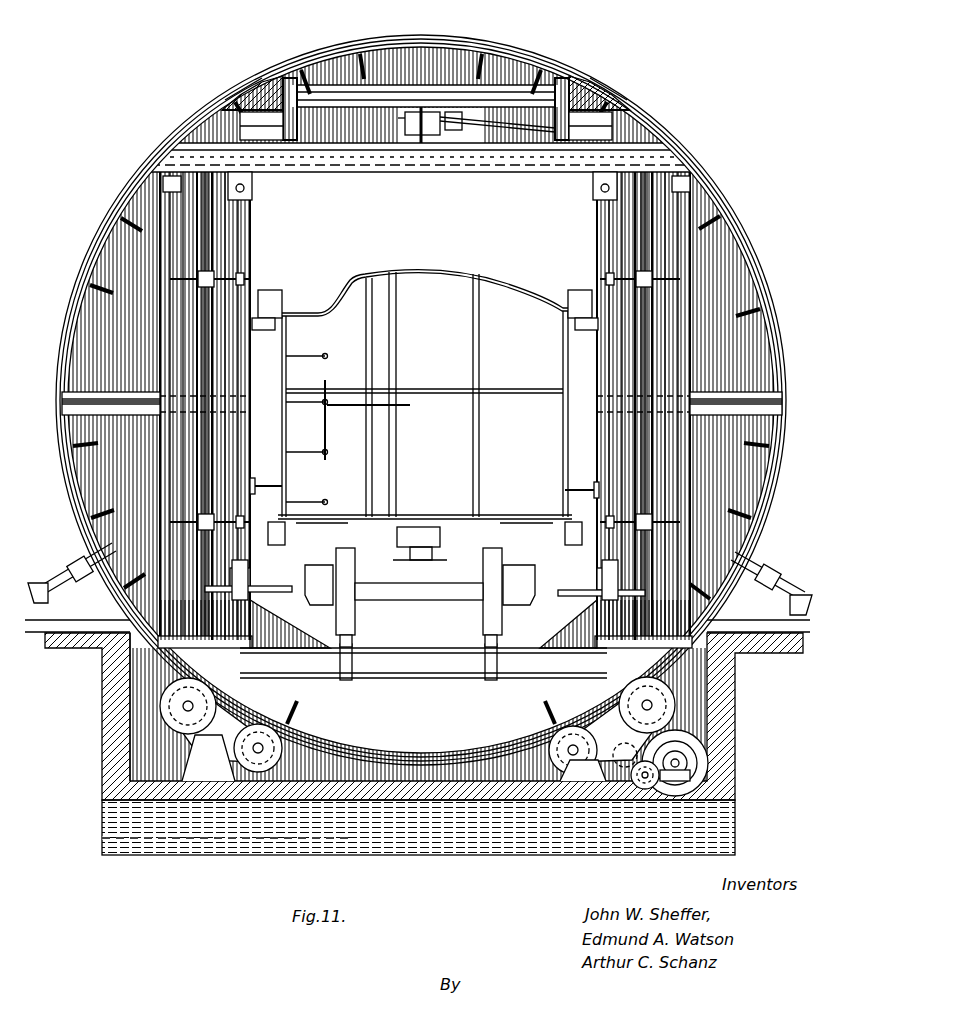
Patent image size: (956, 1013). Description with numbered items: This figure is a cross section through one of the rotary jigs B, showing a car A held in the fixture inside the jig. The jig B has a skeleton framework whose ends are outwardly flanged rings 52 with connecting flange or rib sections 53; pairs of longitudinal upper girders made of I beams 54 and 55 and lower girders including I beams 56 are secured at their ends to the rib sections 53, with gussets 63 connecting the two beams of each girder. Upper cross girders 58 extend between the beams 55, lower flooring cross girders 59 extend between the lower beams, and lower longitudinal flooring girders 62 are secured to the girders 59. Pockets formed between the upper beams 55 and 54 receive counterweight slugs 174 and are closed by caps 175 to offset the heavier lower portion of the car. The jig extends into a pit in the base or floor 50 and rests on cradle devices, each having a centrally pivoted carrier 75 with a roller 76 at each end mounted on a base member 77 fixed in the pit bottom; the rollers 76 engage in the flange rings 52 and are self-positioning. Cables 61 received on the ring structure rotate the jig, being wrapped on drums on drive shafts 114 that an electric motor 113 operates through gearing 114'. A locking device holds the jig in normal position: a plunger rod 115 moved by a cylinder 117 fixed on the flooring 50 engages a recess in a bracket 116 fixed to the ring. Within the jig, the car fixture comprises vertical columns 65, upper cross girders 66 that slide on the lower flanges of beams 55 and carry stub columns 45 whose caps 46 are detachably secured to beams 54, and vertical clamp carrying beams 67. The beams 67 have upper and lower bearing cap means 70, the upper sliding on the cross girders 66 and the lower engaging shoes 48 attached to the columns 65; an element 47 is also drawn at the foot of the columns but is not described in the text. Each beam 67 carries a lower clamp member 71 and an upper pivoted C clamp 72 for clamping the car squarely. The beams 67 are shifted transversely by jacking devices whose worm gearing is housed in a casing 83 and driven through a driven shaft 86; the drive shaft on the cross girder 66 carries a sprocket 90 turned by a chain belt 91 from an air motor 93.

The stub column 45 is at (248, 136).
The stub column cap 46 is at (250, 122).
The base plate 47 is at (255, 590).
The shoe 48 is at (232, 576).
The base or floor 50 is at (62, 648).
The outwardly flanged ring 52 is at (68, 412).
The connecting flange section 53 is at (115, 238).
The I beam 54 is at (242, 92).
The I beam 55 is at (293, 80).
The I beam 56 is at (120, 672).
The upper cross girder 58 is at (472, 88).
The lower flooring cross girder 59 is at (420, 665).
The cable 61 is at (500, 783).
The lower longitudinal flooring girder 62 is at (352, 652).
The gusset 63 is at (128, 690).
The vertical column 65 is at (172, 202).
The upper cross girder 66 is at (358, 162).
The vertical clamp carrying beam 67 is at (243, 240).
The bearing cap means 70 is at (238, 198).
The lower clamp member 71 is at (265, 486).
The upper pivoted C clamp 72 is at (262, 290).
The centrally pivoted carrier 75 is at (417, 727).
The roller 76 is at (165, 712).
The base member 77 is at (200, 765).
The casing 83 is at (198, 279).
The driven shaft 86 is at (190, 322).
The sprocket 90 is at (418, 124).
The chain belt 91 is at (416, 130).
The air motor 93 is at (432, 128).
The electric motor 113 is at (648, 780).
The drive shaft 114 is at (703, 775).
The gearing 114' is at (712, 755).
The plunger rod 115 is at (96, 556).
The bracket 116 is at (100, 536).
The cylinder 117 is at (36, 586).
The counterweight slug 174 is at (258, 78).
The cap 175 is at (250, 96).
The railway car A is at (345, 296).
The jig B is at (106, 210).